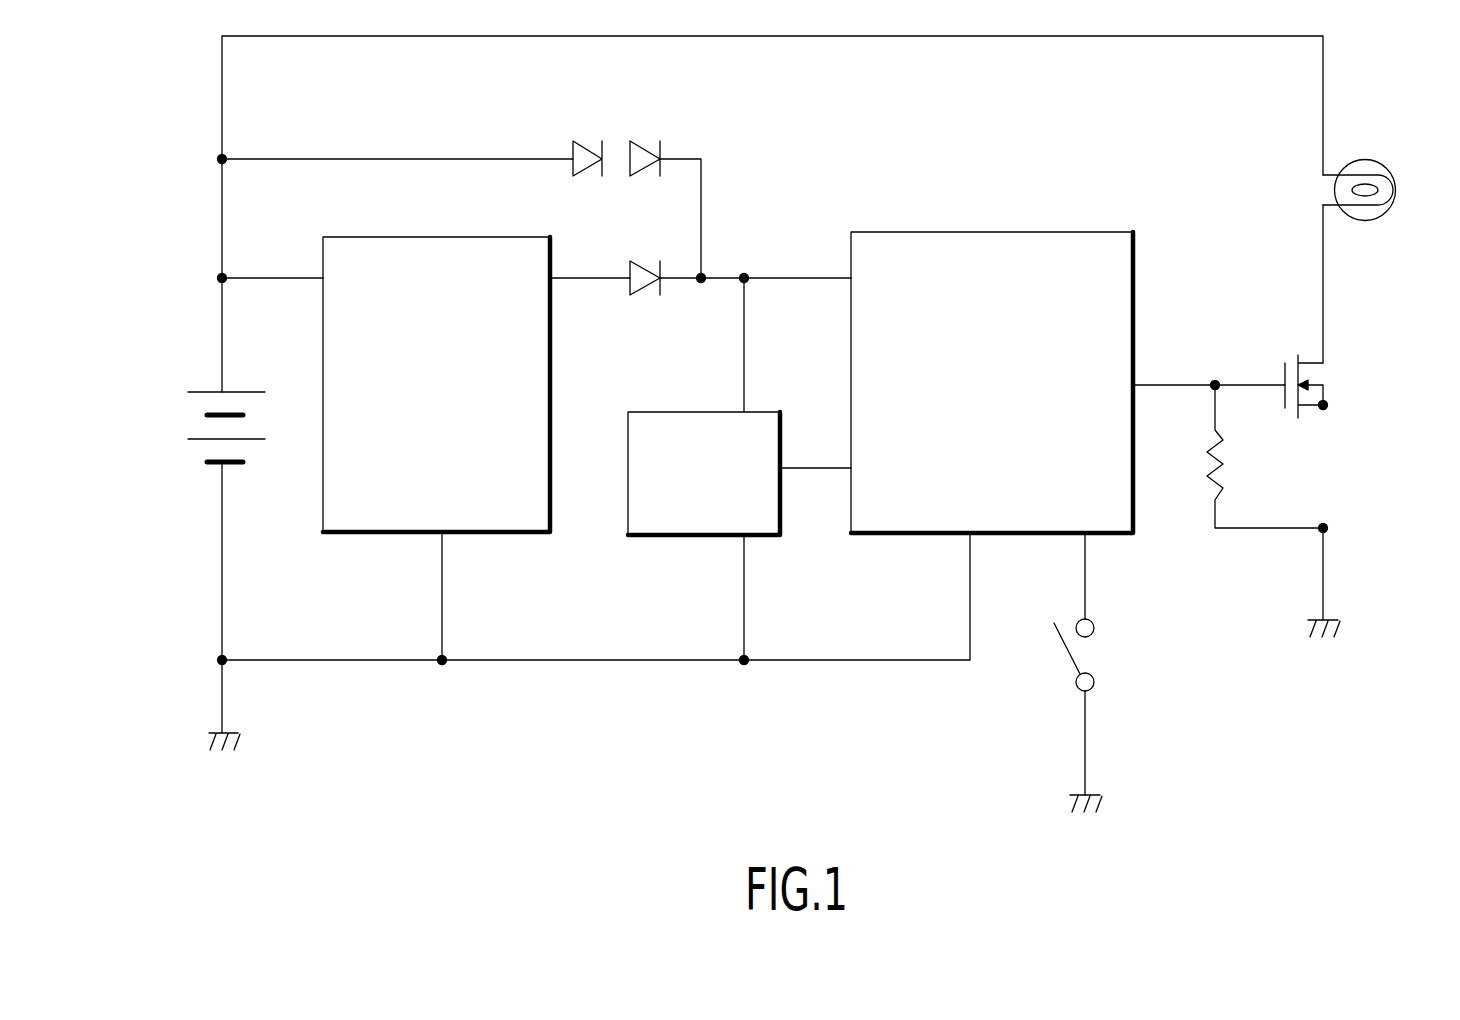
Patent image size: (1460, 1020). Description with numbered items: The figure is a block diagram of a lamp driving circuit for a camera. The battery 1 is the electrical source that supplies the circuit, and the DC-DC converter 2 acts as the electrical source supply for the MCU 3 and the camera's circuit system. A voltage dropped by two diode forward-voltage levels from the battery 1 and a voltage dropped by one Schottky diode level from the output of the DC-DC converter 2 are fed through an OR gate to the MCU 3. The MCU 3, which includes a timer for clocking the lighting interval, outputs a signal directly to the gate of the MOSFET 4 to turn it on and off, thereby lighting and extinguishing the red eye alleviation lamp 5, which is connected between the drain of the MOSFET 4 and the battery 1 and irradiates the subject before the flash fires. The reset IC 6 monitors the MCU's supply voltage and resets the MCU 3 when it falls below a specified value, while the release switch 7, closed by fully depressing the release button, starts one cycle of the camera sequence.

The battery 1 is at (182, 420).
The DC-DC converter 2 is at (377, 518).
The MCU 3 is at (928, 521).
The MOSFET 4 is at (1336, 385).
The red eye alleviation lamp 5 is at (1398, 198).
The reset IC 6 is at (668, 522).
The release switch 7 is at (1105, 653).